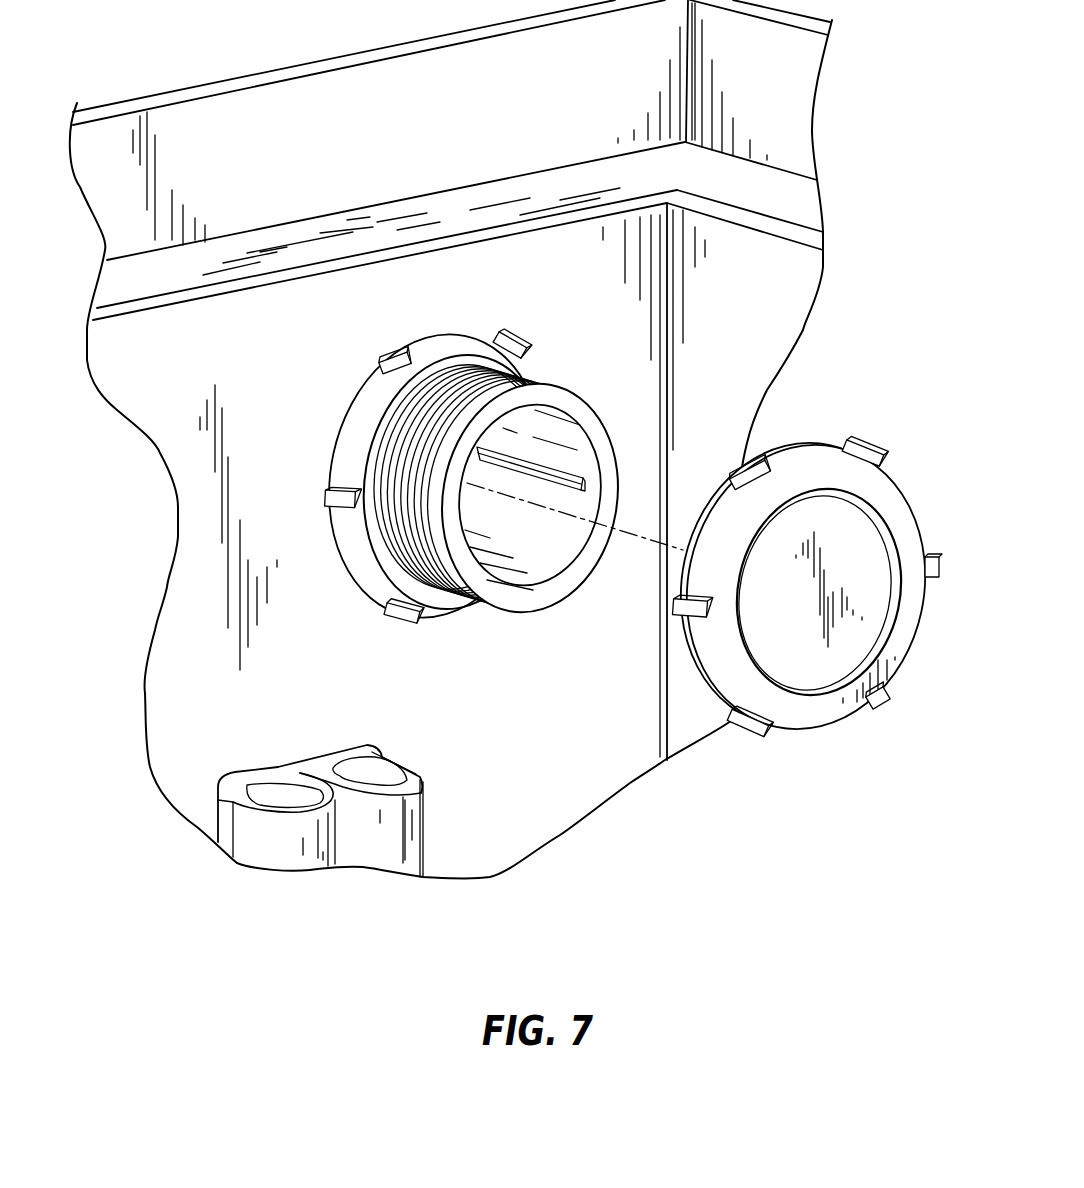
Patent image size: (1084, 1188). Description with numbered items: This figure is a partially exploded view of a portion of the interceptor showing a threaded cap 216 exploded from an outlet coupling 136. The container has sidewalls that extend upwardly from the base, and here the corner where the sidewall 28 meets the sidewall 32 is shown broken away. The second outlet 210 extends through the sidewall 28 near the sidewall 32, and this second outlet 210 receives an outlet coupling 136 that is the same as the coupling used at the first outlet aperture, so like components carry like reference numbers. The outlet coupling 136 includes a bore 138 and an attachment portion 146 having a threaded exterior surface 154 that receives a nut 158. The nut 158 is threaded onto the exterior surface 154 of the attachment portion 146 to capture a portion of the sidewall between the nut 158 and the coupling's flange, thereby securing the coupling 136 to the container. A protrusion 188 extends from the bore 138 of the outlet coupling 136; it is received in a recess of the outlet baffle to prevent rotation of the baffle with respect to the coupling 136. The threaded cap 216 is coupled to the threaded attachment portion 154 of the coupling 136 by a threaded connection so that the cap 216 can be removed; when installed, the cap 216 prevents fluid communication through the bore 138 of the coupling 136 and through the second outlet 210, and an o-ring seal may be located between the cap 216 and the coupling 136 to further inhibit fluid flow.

The sidewall 28 is at (216, 344).
The sidewall 32 is at (732, 242).
The outlet coupling 136 is at (518, 605).
The bore 138 is at (537, 577).
The attachment portion 146 is at (436, 605).
The threaded exterior surface 154 is at (465, 400).
The nut 158 is at (362, 570).
The protrusion 188 is at (572, 467).
The second outlet 210 is at (542, 530).
The threaded cap 216 is at (898, 484).